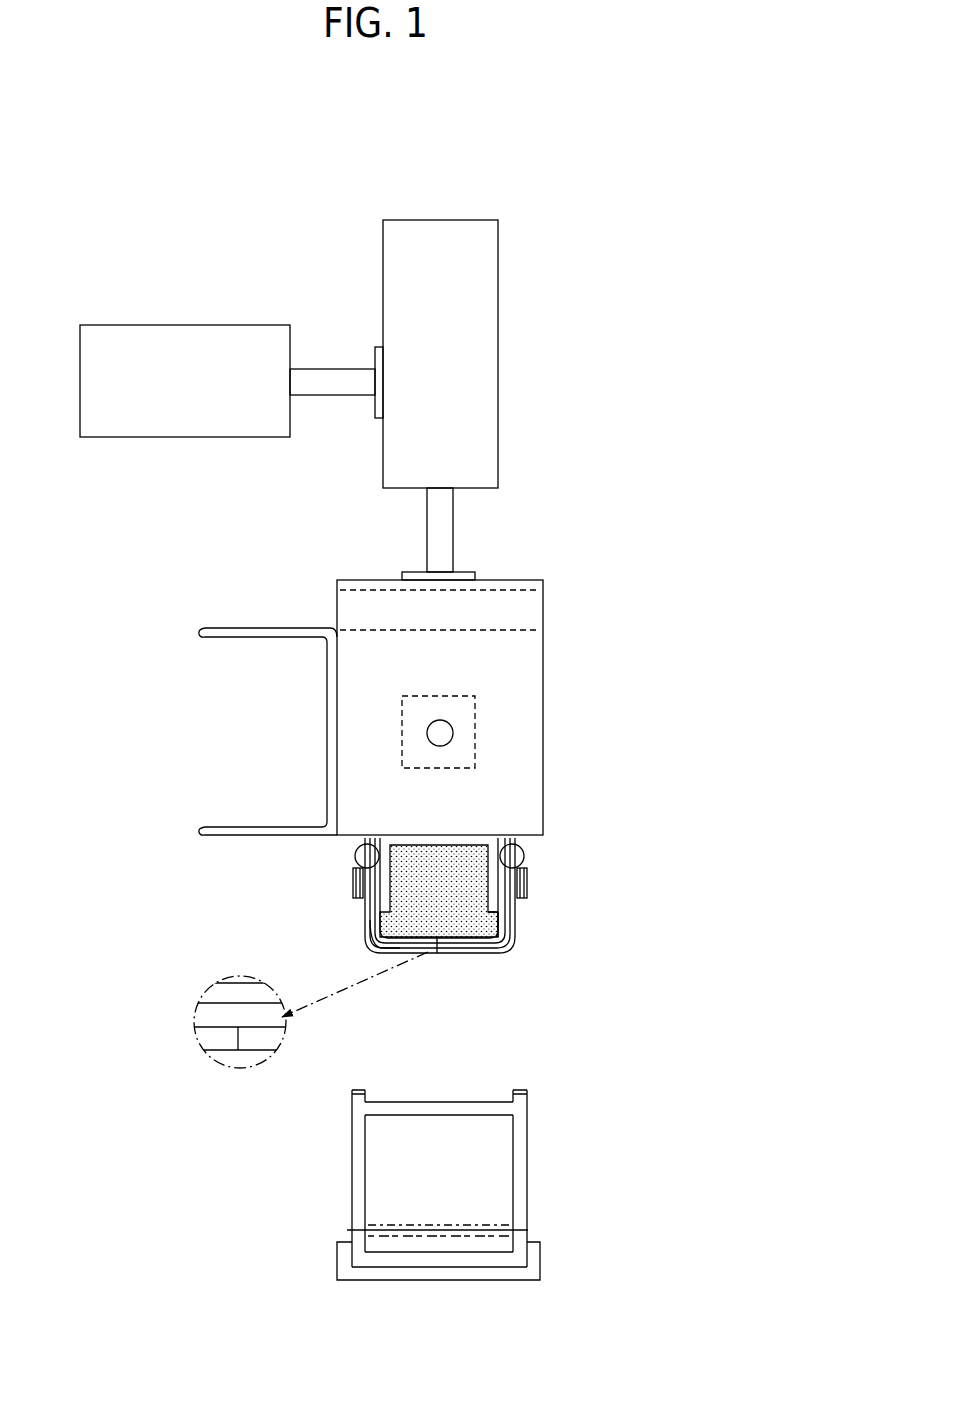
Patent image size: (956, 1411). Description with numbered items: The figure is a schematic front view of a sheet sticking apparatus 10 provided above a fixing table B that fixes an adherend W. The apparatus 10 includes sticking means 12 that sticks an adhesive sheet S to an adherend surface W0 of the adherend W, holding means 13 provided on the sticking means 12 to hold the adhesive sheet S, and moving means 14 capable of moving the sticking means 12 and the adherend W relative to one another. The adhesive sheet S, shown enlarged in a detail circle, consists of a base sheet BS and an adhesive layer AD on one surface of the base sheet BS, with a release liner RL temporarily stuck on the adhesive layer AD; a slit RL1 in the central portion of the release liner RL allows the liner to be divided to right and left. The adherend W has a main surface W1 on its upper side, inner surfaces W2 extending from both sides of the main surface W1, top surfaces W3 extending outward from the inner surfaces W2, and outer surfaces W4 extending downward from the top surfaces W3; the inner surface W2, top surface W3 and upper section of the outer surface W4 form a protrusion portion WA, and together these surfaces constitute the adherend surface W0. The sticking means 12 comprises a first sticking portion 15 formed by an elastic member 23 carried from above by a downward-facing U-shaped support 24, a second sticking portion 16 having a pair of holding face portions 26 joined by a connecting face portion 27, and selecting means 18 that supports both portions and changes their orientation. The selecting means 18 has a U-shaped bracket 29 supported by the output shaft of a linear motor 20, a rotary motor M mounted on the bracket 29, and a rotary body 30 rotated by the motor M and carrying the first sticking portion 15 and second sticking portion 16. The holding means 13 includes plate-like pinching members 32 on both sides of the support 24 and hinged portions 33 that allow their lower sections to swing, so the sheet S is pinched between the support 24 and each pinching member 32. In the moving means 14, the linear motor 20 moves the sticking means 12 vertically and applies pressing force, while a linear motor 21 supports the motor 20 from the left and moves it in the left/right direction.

The sheet sticking apparatus 10 is at (288, 200).
The moving means 14 is at (148, 293).
The linear motor 21 is at (192, 330).
The linear motor 20 is at (388, 302).
The selecting means 18 is at (548, 577).
The bracket 29 is at (513, 577).
The sticking means 12 is at (548, 788).
The rotary body 30 is at (520, 630).
The rotary motor M is at (475, 745).
The support 24 is at (445, 835).
The elastic member 23 is at (490, 913).
The second sticking portion 16 is at (277, 627).
The holding face portions 26 is at (240, 636).
The connecting face portion 27 is at (332, 735).
The holding means 13 is at (528, 848).
The hinged portions 33 is at (357, 853).
The pinching members 32 is at (353, 892).
The adhesive sheet S is at (503, 942).
The first sticking portion 15 is at (385, 930).
The release liner RL is at (488, 953).
The slit RL1 is at (437, 952).
The adhesive layer AD is at (200, 1020).
The base sheet BS is at (203, 997).
The adherend W is at (527, 1175).
The adherend surface W0 is at (430, 1100).
The main surface W1 is at (403, 1103).
The inner surfaces W2 is at (367, 1102).
The top surfaces W3 is at (355, 1090).
The outer surfaces W4 is at (360, 1160).
The protrusion portion WA is at (355, 1098).
The fixing table B is at (540, 1257).